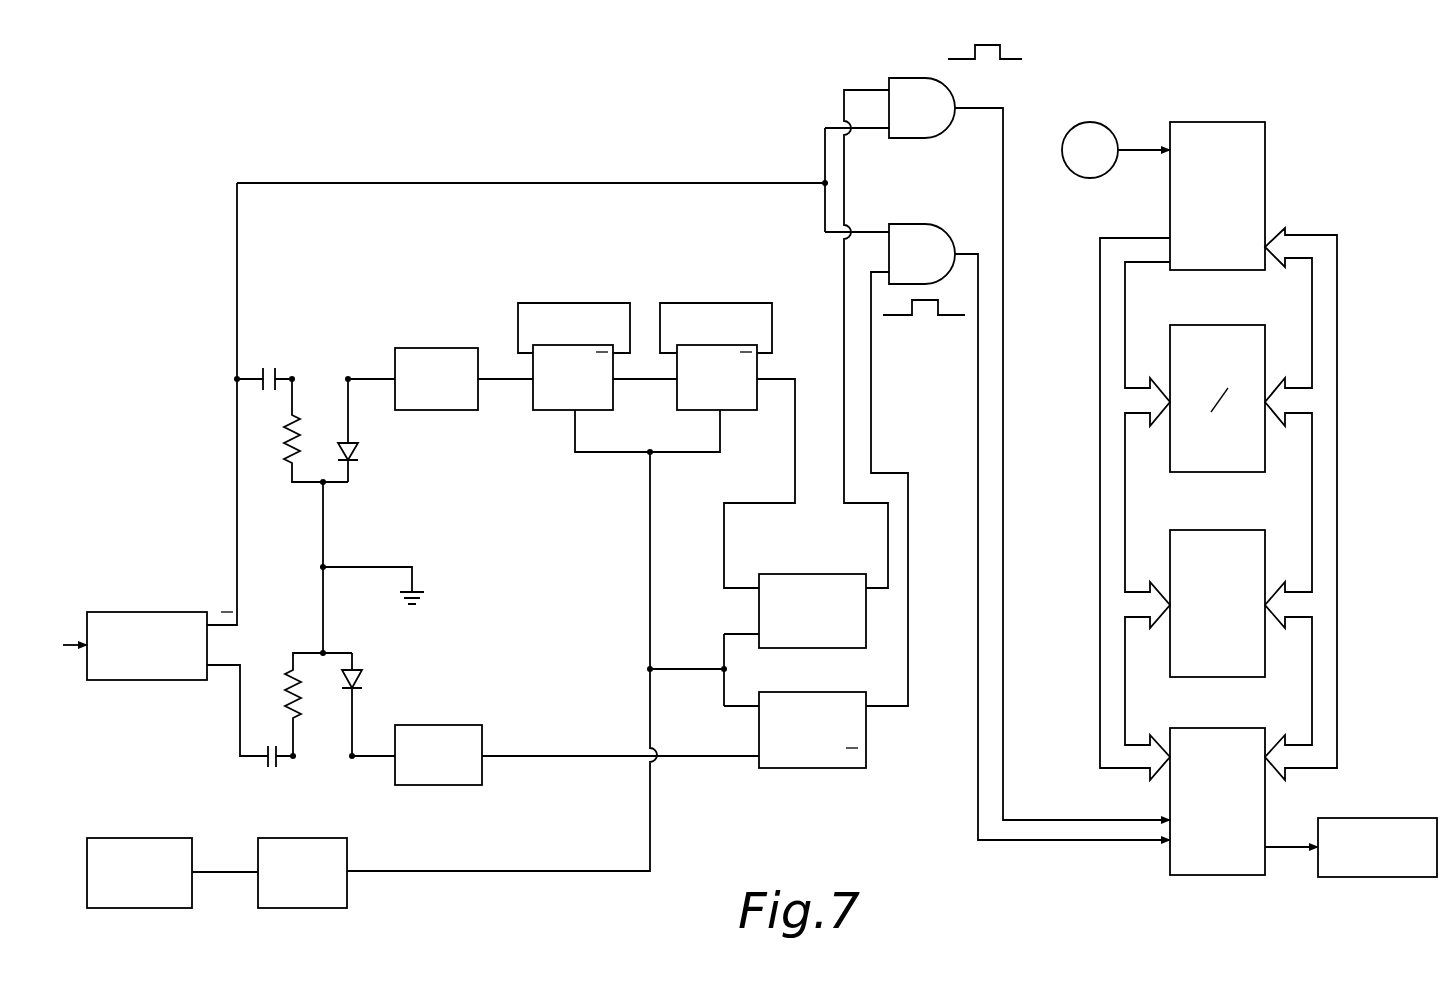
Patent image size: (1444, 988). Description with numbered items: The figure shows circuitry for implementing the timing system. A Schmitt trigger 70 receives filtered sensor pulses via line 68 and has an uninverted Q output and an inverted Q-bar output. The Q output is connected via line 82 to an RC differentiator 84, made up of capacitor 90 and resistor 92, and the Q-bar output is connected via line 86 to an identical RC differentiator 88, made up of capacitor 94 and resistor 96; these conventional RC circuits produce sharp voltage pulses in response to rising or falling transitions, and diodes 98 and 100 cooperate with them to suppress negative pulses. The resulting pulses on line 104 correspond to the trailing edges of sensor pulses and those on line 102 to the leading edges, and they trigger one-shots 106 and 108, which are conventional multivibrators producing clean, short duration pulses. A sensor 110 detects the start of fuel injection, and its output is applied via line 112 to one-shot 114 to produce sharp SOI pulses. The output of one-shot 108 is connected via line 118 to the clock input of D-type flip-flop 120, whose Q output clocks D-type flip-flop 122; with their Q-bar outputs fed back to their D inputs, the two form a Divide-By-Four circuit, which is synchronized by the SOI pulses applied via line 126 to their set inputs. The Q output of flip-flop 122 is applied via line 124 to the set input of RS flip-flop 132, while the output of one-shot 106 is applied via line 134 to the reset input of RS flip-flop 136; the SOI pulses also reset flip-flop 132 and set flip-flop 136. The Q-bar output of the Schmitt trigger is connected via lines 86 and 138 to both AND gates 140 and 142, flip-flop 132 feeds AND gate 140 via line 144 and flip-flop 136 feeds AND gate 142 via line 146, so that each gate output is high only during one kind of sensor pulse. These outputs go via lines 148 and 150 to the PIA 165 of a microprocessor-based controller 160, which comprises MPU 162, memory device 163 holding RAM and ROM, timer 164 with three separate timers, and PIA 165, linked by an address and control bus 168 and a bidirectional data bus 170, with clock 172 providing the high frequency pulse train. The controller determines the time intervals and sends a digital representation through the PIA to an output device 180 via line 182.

The line 68 is at (63, 648).
The Schmitt trigger 70 is at (147, 611).
The line 82 is at (237, 715).
The RC differentiator 84 is at (285, 770).
The line 86 is at (237, 478).
The RC differentiator 88 is at (327, 296).
The capacitor 90 is at (263, 765).
The resistor 92 is at (290, 678).
The capacitor 94 is at (276, 376).
The resistor 96 is at (290, 438).
The diode 98 is at (360, 688).
The diode 100 is at (352, 452).
The line 102 is at (372, 376).
The line 104 is at (370, 758).
The one-shot 106 is at (468, 726).
The one-shot 108 is at (410, 412).
The sensor 110 is at (110, 910).
The line 112 is at (222, 873).
The one-shot 114 is at (348, 893).
The line 118 is at (502, 377).
The D-type flip-flop 120 is at (550, 410).
The D-type flip-flop 122 is at (738, 405).
The line 124 is at (795, 405).
The line 126 is at (650, 537).
The RS flip-flop 132 is at (830, 574).
The line 134 is at (612, 753).
The RS flip-flop 136 is at (838, 768).
The line 138 is at (597, 183).
The AND gate 140 is at (920, 140).
The AND gate 142 is at (920, 222).
The line 144 is at (842, 292).
The line 146 is at (872, 410).
The line 148 is at (1003, 560).
The line 150 is at (978, 565).
The microprocessor-based controller 160 is at (1222, 500).
The MPU 162 is at (1265, 197).
The memory device (RAM/ROM) 163 is at (1218, 466).
The timer 164 is at (1222, 678).
The PIA 165 is at (1203, 877).
The address and control bus 168 is at (1105, 313).
The data bus 170 is at (1323, 325).
The clock 172 is at (1113, 168).
The output device 180 is at (1360, 872).
The line 182 is at (1293, 850).